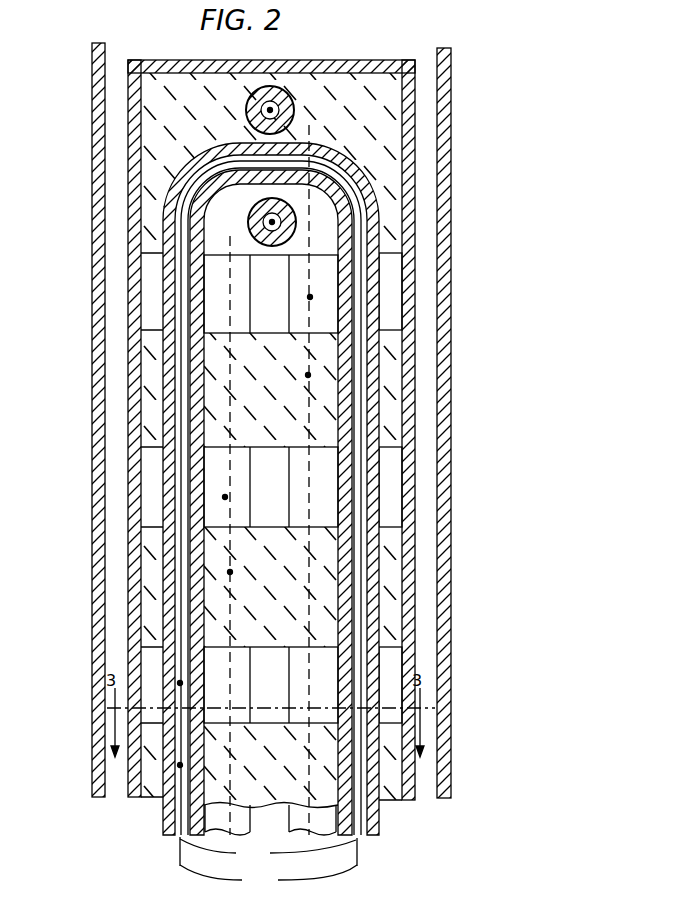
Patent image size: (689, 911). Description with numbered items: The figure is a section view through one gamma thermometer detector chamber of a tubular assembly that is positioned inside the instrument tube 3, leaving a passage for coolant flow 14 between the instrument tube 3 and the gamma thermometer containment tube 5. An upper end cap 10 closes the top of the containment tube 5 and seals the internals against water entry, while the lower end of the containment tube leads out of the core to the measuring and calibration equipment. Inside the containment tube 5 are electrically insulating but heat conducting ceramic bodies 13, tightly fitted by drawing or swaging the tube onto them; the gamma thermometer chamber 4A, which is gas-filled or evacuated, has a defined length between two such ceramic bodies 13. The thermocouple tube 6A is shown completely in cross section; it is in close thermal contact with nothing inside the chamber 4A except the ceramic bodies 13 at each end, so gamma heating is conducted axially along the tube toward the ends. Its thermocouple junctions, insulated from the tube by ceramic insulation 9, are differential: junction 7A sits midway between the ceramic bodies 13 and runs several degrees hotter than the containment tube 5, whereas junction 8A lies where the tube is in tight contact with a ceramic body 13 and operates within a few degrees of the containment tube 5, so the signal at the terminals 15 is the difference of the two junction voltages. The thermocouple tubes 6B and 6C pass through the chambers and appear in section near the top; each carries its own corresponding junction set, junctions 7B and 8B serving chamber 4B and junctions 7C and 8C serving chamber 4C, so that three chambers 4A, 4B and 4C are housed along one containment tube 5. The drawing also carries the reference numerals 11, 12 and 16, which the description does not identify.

The instrument tube 3 is at (92, 116).
The passage for coolant flow 14 is at (121, 62).
The upper end cap 10 is at (157, 73).
The containment tube 5 is at (127, 284).
The ceramic bodies 13 is at (160, 152).
The sheath 12 is at (170, 230).
The ceramic insulation 9 is at (176, 378).
The heating element stack 11 is at (180, 725).
The thermocouple tube 6A is at (163, 321).
The thermocouple tube 6B is at (230, 492).
The thermocouple tube 6C is at (328, 114).
The thermocouple junction 7A is at (180, 683).
The thermocouple junction 7B is at (224, 497).
The thermocouple junction 7C is at (310, 297).
The thermocouple junction 8A is at (180, 765).
The thermocouple junction 8B is at (230, 572).
The thermocouple junction 8C is at (308, 375).
The gamma thermometer chamber 4A is at (388, 671).
The gamma thermometer chamber 4B is at (390, 491).
The gamma thermometer chamber 4C is at (395, 292).
The inner diameter 16 is at (268, 851).
The terminals 15 is at (268, 879).